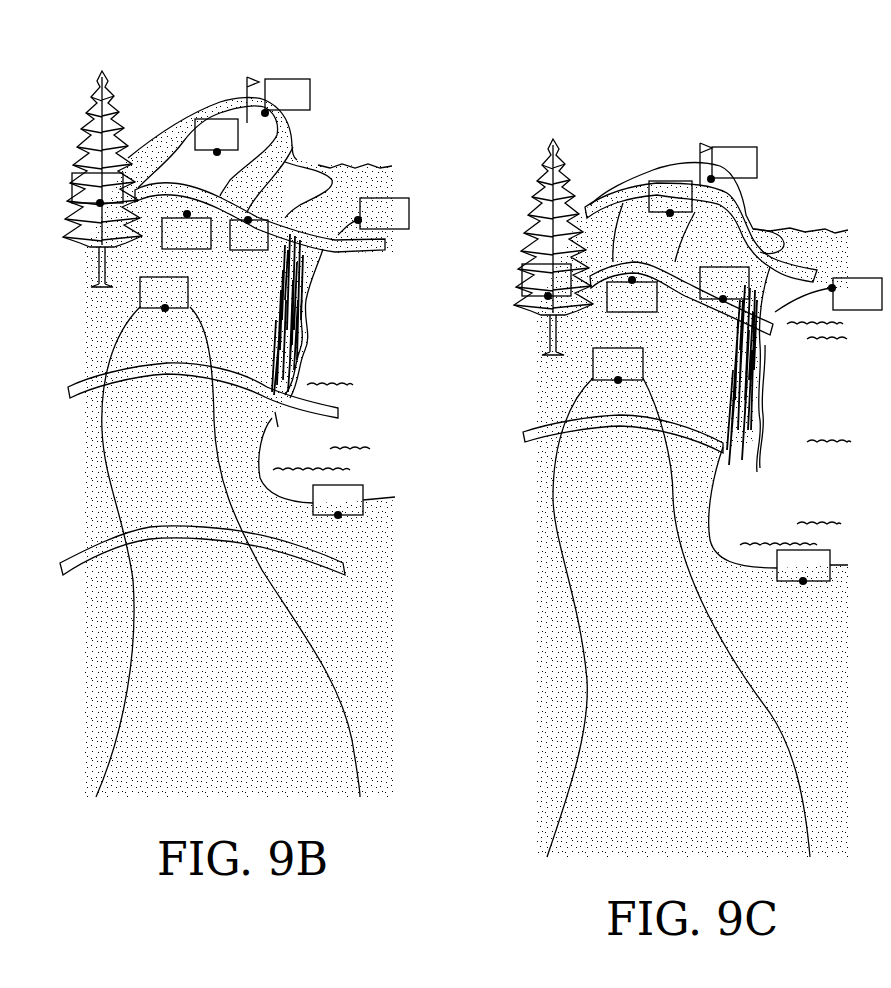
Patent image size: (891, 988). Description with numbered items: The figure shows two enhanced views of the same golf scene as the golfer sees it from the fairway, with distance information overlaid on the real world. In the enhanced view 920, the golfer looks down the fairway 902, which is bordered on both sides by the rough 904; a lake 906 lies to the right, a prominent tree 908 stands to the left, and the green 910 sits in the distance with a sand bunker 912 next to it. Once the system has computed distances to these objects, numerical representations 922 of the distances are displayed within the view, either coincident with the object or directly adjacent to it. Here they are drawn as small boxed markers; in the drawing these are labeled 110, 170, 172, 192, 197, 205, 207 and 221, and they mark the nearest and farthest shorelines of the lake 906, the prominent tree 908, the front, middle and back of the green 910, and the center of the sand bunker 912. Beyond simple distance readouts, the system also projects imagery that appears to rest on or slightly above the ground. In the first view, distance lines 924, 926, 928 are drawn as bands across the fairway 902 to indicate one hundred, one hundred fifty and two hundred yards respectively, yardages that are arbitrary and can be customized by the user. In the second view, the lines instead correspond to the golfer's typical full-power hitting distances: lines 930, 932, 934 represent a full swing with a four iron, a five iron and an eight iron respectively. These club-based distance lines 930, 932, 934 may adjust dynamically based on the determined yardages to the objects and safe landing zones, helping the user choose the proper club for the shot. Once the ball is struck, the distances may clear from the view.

In FIG. 9B, the location marker 110 is at (338, 502).
In FIG. 9C, the location marker 110 is at (803, 567).
In FIG. 9B, the location marker 170 is at (97, 190).
In FIG. 9C, the location marker 170 is at (546, 282).
In FIG. 9B, the location marker 172 is at (164, 294).
In FIG. 9C, the location marker 172 is at (618, 366).
In FIG. 9B, the location marker 192 is at (186, 229).
In FIG. 9C, the location marker 192 is at (632, 294).
In FIG. 9B, the location marker 197 is at (249, 233).
In FIG. 9C, the location marker 197 is at (724, 285).
In FIG. 9B, the location marker 205 is at (373, 216).
In FIG. 9C, the location marker 205 is at (828, 295).
In FIG. 9B, the location marker 207 is at (216, 137).
In FIG. 9C, the location marker 207 is at (670, 199).
In FIG. 9B, the location marker 221 is at (278, 100).
In FIG. 9C, the location marker 221 is at (728, 164).
In FIG. 9B, the fairway 902 is at (235, 697).
In FIG. 9C, the fairway 902 is at (701, 767).
In FIG. 9B, the rough 904 is at (116, 638).
In FIG. 9C, the rough 904 is at (566, 715).
In FIG. 9B, the lake 906 is at (361, 367).
In FIG. 9C, the lake 906 is at (819, 422).
In FIG. 9B, the prominent tree 908 is at (80, 257).
In FIG. 9C, the prominent tree 908 is at (540, 305).
In FIG. 9B, the green 910 is at (227, 110).
In FIG. 9C, the green 910 is at (677, 168).
In FIG. 9B, the sand bunker 912 is at (310, 170).
In FIG. 9C, the sand bunker 912 is at (768, 240).
In FIG. 9B, the enhanced view 920 is at (417, 45).
In FIG. 9B, the numerical representations of the distances 922 is at (186, 135).
In FIG. 9B, the distance line 924 is at (63, 560).
In FIG. 9B, the distance line 926 is at (70, 385).
In FIG. 9B, the distance line 928 is at (380, 250).
In FIG. 9C, the club-based distance line 930 is at (800, 265).
In FIG. 9C, the club-based distance line 932 is at (717, 318).
In FIG. 9C, the club-based distance line 934 is at (683, 446).